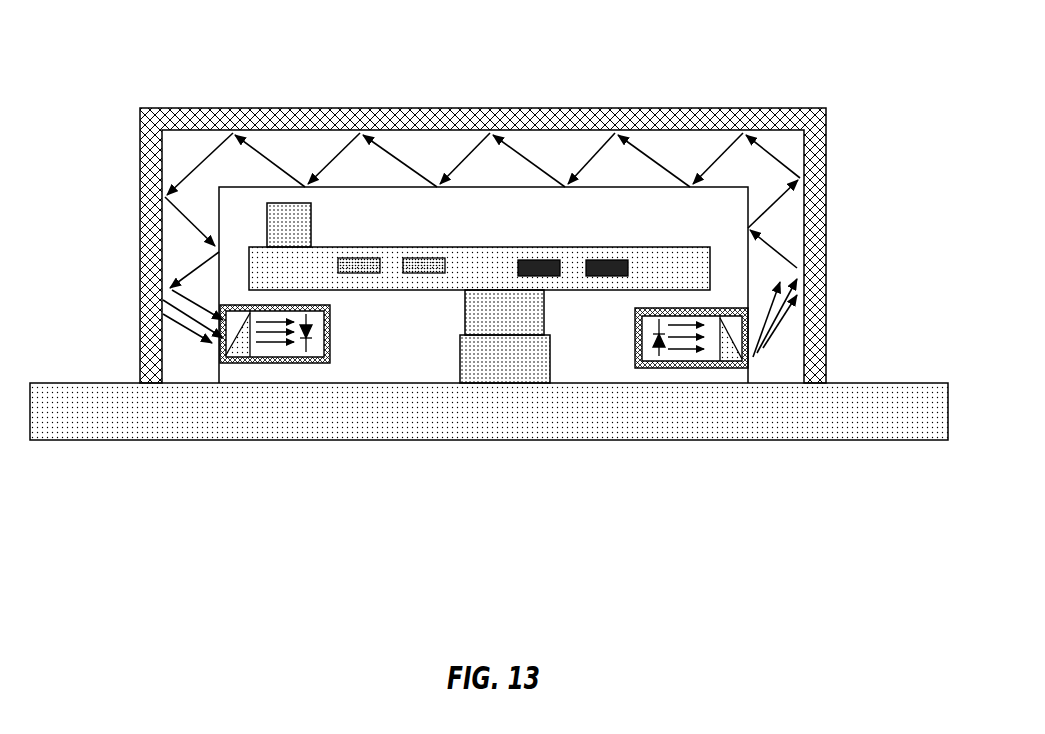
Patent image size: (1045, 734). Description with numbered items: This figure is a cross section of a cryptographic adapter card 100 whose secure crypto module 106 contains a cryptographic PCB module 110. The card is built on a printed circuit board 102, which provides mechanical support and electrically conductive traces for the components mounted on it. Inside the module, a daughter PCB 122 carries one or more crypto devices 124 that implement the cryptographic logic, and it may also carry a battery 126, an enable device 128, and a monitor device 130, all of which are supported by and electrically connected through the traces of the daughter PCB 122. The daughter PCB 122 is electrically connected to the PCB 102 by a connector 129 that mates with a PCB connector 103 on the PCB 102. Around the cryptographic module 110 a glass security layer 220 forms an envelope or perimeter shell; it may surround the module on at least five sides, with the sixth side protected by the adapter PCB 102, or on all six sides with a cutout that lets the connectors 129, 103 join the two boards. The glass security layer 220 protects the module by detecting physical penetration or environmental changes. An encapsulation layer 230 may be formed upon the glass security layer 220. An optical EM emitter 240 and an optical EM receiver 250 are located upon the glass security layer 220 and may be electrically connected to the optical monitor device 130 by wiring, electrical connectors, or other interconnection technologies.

The cryptographic adapter card 100 is at (596, 57).
The cryptographic PCB module 110 is at (751, 77).
The secure crypto module 106 is at (109, 129).
The printed circuit board 102 is at (693, 430).
The PCB connector 103 is at (486, 373).
The connector 129 is at (517, 316).
The daughter PCB 122 is at (392, 283).
The crypto devices 124 is at (538, 260).
The battery 126 is at (291, 216).
The enable device 128 is at (420, 269).
The monitor device 130 is at (358, 265).
The encapsulation layer 230 is at (824, 246).
The glass security layer 220 is at (800, 343).
The optical EM emitter 240 is at (631, 484).
The optical EM receiver 250 is at (340, 472).